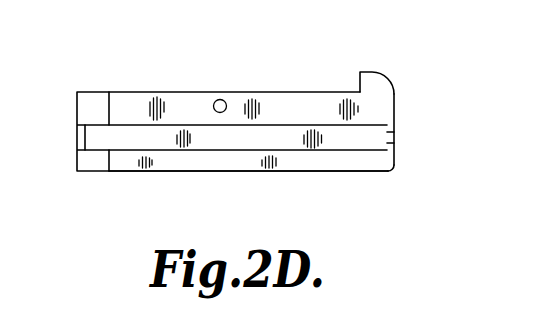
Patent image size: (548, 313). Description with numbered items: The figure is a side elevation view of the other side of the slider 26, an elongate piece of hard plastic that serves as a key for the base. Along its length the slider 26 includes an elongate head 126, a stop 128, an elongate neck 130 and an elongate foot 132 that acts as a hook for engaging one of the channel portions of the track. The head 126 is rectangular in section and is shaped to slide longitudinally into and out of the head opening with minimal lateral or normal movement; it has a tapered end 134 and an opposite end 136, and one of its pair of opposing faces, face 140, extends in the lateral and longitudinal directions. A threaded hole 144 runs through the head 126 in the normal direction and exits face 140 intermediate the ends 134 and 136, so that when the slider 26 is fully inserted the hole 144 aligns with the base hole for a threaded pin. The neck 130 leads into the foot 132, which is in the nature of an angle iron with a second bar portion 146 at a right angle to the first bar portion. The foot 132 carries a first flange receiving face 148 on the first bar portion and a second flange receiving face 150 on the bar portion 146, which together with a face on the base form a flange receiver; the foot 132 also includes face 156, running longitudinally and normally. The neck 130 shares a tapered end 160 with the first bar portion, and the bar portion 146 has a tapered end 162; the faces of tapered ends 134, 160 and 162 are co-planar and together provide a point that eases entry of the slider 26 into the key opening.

The slider 26 is at (156, 175).
The elongate head 126 is at (153, 100).
The stop 128 is at (372, 70).
The elongate neck 130 is at (394, 131).
The elongate foot 132 is at (394, 143).
The tapered end 134 is at (90, 103).
The opposite end 136 is at (394, 103).
The face 140 is at (310, 103).
The threaded hole 144 is at (225, 101).
The second bar portion 146 is at (325, 172).
The first flange receiving face 148 is at (200, 133).
The second flange receiving face 150 is at (358, 148).
The face 156 is at (243, 172).
The tapered end 160 is at (77, 128).
The tapered end 162 is at (77, 158).